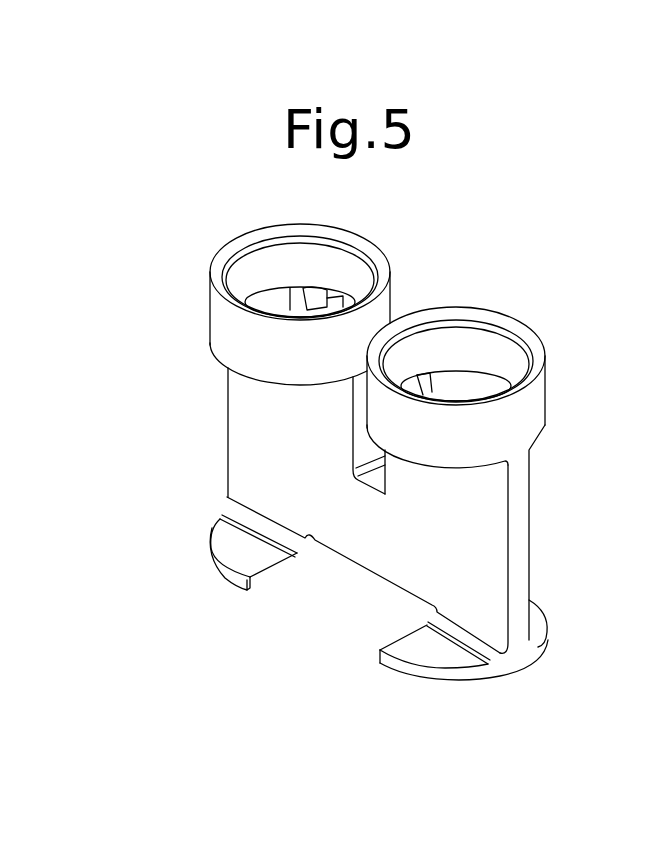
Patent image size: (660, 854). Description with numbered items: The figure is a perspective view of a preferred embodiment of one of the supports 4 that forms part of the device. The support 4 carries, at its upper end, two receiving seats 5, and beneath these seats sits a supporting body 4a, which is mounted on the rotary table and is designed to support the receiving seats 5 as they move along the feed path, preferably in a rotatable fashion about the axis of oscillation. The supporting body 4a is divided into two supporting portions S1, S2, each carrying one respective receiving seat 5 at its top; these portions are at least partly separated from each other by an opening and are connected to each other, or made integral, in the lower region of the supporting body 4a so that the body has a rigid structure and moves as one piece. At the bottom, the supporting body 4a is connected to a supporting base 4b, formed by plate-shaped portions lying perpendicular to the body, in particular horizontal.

The support 4 is at (498, 270).
The supporting body 4a is at (519, 555).
The supporting base 4b is at (418, 650).
The receiving seat 5 is at (381, 307).
The supporting portion S1 is at (247, 413).
The supporting portion S2 is at (477, 511).